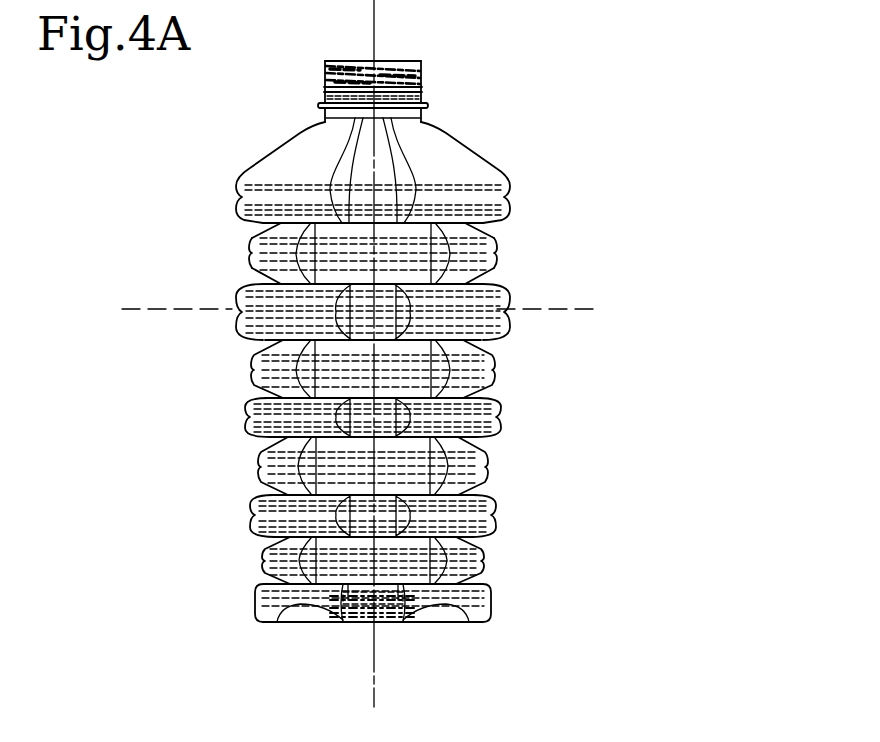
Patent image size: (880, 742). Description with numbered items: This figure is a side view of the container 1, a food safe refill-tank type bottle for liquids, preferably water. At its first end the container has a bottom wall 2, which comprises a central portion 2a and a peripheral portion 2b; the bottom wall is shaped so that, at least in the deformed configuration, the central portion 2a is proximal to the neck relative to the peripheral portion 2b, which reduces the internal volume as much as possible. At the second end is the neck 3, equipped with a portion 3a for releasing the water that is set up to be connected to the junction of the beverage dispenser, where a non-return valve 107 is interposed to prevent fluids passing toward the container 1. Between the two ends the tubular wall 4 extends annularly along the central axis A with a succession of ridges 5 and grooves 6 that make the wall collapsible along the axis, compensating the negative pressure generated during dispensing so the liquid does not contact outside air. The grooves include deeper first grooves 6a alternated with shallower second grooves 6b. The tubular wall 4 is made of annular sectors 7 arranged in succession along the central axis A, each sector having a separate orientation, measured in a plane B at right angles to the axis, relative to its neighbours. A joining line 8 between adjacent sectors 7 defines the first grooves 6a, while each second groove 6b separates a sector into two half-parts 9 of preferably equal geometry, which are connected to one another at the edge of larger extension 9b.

The container 1 is at (401, 353).
The bottom wall 2 is at (356, 632).
The central portion 2a is at (360, 622).
The peripheral portion 2b is at (299, 622).
The neck 3 is at (409, 95).
The portion for releasing the water 3a is at (318, 104).
The tubular wall 4 is at (392, 351).
The ridges 5 is at (490, 242).
The grooves 6 is at (489, 238).
The first grooves 6a is at (487, 233).
The second grooves 6b is at (496, 259).
The sectors 7 is at (237, 248).
The joining line 8 is at (250, 265).
The half-parts 9 is at (245, 390).
The edge of larger extension 9b is at (250, 418).
The non-return valve 107 is at (430, 70).
The central axis A is at (374, 42).
The plane B is at (497, 278).